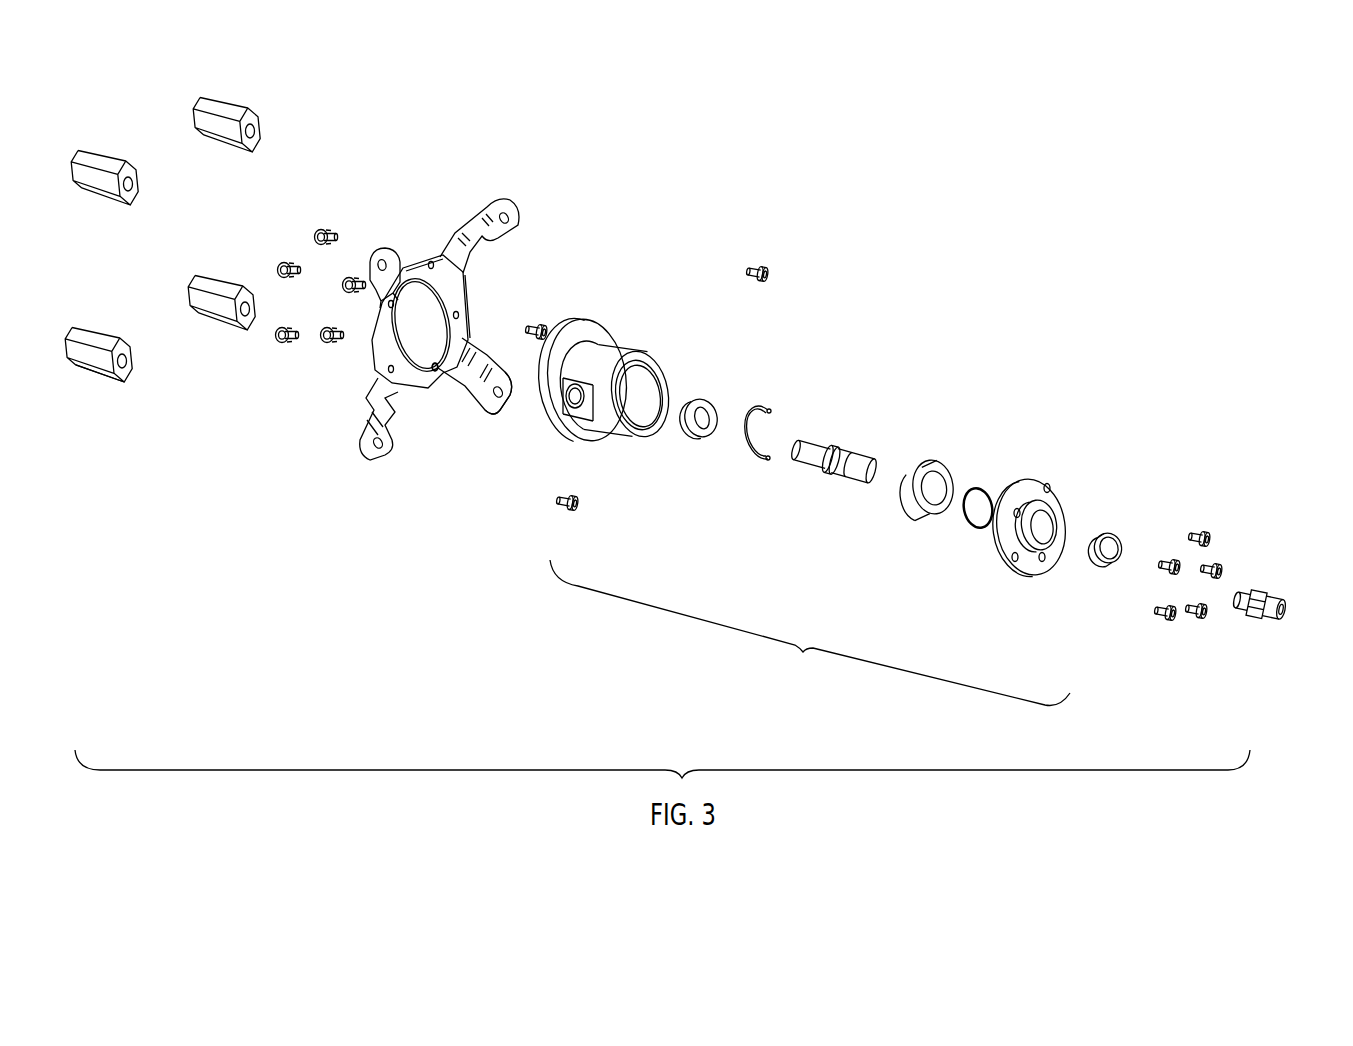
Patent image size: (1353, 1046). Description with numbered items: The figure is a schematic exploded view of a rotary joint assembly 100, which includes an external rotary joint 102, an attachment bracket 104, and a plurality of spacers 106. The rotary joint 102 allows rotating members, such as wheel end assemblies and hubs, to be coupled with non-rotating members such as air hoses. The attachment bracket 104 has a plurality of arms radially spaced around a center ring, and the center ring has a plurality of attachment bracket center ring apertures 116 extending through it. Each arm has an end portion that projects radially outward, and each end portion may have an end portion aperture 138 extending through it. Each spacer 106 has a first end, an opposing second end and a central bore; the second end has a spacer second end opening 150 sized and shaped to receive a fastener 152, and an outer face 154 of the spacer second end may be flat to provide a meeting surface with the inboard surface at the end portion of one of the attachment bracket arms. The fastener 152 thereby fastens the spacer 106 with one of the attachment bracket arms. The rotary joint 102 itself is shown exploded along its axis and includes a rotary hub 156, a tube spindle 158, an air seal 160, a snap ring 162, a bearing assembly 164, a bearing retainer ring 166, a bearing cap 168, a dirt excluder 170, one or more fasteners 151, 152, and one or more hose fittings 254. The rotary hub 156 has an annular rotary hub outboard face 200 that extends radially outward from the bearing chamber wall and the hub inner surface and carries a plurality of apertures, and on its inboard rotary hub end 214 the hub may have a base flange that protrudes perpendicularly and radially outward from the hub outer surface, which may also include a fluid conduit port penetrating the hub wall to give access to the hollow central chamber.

The rotary joint assembly 100 is at (823, 218).
The external rotary joint 102 is at (810, 633).
The attachment bracket 104 is at (473, 227).
The spacer 106 is at (107, 377).
The attachment bracket center ring aperture 116 is at (433, 371).
The end portion aperture 138 is at (498, 408).
The spacer second end opening 150 is at (130, 360).
The fastener 151 is at (323, 231).
The fastener 152 is at (578, 507).
The outer face 154 is at (135, 188).
The rotary hub 156 is at (640, 352).
The tube spindle 158 is at (843, 440).
The air seal 160 is at (703, 398).
The snap ring 162 is at (763, 408).
The bearing assembly 164 is at (935, 460).
The bearing retainer ring 166 is at (980, 488).
The bearing cap 168 is at (1054, 482).
The dirt excluder 170 is at (1108, 534).
The rotary hub outboard face 200 is at (640, 436).
The inboard rotary hub end 214 is at (592, 320).
The hose fitting 254 is at (1268, 592).